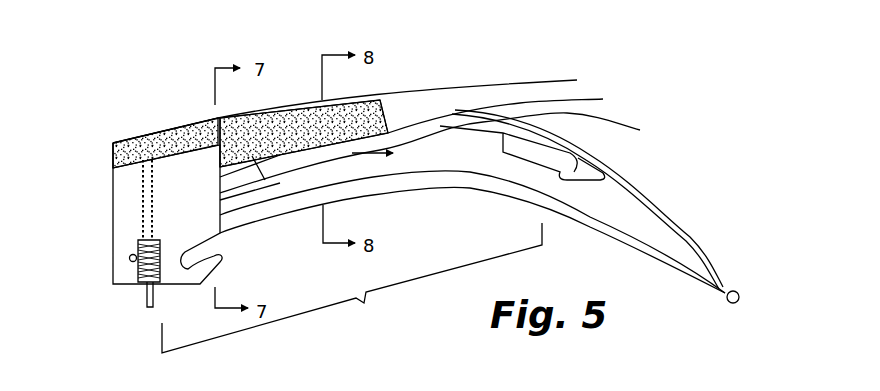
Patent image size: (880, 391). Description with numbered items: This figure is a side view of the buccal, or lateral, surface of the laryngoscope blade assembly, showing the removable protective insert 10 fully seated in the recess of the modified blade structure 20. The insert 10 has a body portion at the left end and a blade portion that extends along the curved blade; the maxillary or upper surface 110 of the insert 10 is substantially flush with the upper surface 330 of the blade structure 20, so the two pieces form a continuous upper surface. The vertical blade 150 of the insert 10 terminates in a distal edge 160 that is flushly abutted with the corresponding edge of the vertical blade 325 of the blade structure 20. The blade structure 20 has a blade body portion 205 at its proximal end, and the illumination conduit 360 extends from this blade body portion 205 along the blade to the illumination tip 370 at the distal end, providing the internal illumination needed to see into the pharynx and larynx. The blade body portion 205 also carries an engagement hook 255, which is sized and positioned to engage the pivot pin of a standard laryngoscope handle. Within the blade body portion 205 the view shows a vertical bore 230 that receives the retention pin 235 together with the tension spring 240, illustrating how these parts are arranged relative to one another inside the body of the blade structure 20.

The removable protective insert 10 is at (165, 52).
The modified blade structure 20 is at (352, 288).
The maxillary surface 110 is at (296, 100).
The vertical blade 150 is at (385, 113).
The distal edge 160 is at (423, 137).
The blade body portion 205 is at (143, 210).
The vertical bore 230 is at (128, 192).
The retention pin 235 is at (143, 290).
The tension spring 240 is at (137, 280).
The engagement hook 255 is at (210, 252).
The vertical blade 325 is at (452, 153).
The upper surface 330 is at (580, 76).
The illumination conduit 360 is at (517, 111).
The illumination tip 370 is at (734, 290).